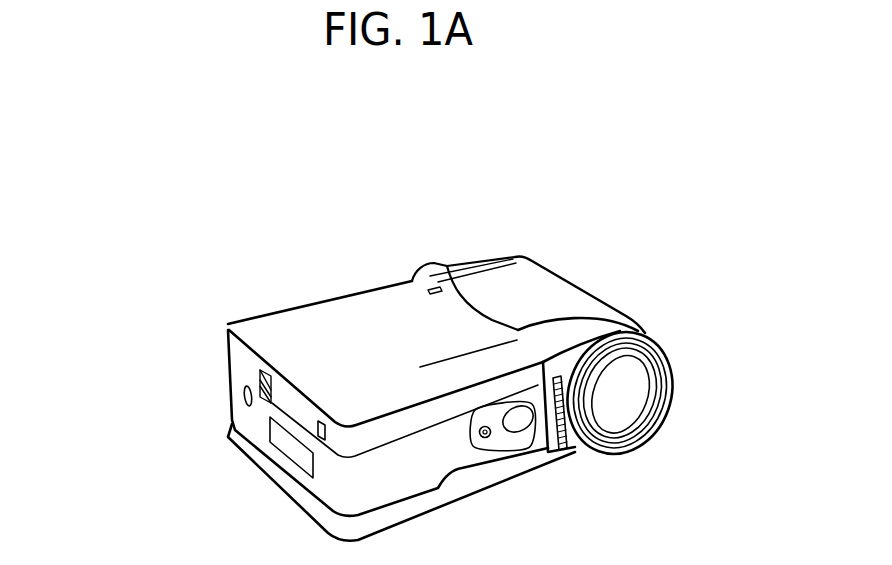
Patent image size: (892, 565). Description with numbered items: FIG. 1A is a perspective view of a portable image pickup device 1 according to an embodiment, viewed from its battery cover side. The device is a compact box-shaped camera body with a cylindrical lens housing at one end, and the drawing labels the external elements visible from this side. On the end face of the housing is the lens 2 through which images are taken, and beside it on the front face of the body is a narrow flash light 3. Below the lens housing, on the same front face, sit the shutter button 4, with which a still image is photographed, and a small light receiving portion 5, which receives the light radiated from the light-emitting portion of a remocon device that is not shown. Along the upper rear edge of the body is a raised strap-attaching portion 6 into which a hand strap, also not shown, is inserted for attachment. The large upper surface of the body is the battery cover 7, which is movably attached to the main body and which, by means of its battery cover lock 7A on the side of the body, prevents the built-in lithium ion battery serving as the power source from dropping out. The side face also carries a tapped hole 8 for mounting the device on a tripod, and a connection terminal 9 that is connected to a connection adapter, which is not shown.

The portable image pickup device 1 is at (549, 236).
The lens 2 is at (623, 385).
The flash light 3 is at (566, 447).
The shutter button 4 is at (518, 425).
The light receiving portion 5 is at (487, 436).
The strap-attaching portion 6 is at (408, 280).
The battery cover 7 is at (322, 326).
The battery cover lock 7A is at (260, 382).
The tapped hole 8 is at (243, 396).
The connection terminal 9 is at (287, 444).